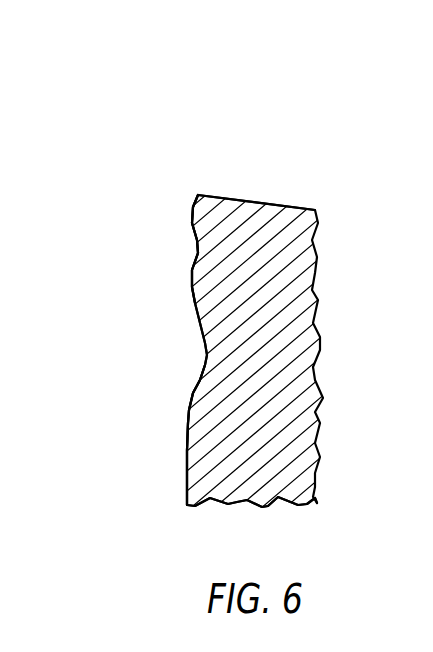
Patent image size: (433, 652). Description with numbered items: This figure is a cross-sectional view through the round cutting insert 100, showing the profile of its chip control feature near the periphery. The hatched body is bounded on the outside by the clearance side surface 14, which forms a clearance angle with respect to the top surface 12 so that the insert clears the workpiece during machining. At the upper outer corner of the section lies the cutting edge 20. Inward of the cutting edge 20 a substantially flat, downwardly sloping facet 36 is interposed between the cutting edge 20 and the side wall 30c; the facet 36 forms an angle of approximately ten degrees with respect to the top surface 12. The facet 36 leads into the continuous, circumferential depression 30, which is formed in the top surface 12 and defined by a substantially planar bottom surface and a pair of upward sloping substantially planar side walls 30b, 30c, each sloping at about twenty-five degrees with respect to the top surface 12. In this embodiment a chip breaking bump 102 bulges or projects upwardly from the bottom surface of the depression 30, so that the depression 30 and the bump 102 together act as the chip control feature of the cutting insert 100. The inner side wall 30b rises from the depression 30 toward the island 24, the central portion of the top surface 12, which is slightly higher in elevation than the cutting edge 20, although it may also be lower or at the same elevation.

The round cutting insert 100 is at (38, 92).
The clearance side surface 14 is at (281, 190).
The cutting edge 20 is at (198, 194).
The facet 36 is at (193, 208).
The side wall 30c is at (192, 233).
The chip breaking bump 102 is at (192, 288).
The depression 30 is at (128, 332).
The side wall 30b is at (193, 392).
The island 24 is at (187, 450).
The top surface 12 is at (152, 487).